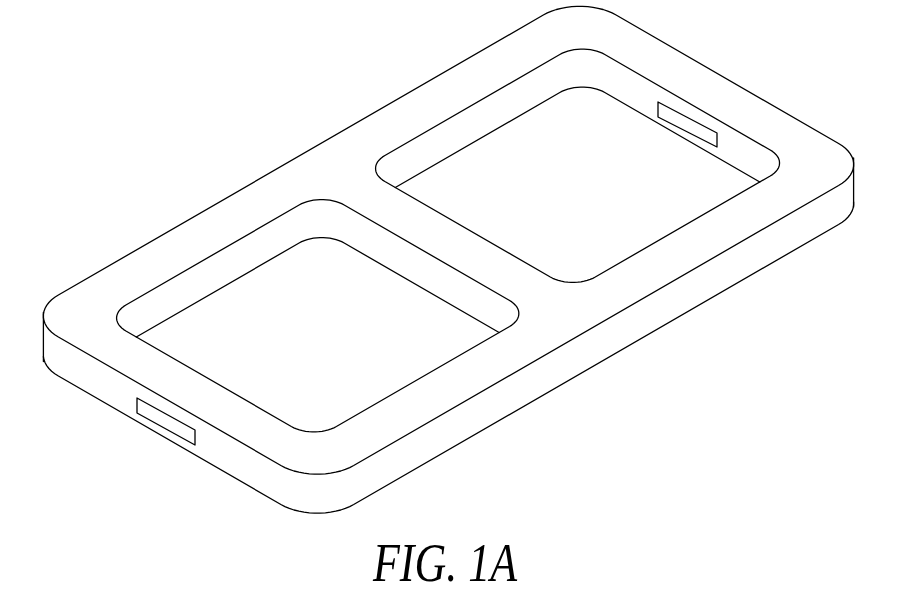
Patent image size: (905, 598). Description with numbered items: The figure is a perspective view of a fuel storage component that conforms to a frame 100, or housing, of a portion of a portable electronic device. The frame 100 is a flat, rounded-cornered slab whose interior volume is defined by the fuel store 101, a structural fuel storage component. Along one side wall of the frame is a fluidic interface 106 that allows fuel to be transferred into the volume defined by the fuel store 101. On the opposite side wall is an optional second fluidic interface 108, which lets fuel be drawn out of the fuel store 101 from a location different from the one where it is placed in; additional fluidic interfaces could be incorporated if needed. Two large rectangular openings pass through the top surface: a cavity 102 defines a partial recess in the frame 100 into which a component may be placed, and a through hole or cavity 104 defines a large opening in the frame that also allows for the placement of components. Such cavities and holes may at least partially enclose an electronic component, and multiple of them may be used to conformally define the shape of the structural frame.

The frame 100 is at (226, 44).
The fuel store 101 is at (462, 80).
The cavity 102 is at (445, 177).
The through hole 104 is at (251, 290).
The fluidic interface 106 is at (163, 422).
The second fluidic interface 108 is at (687, 125).